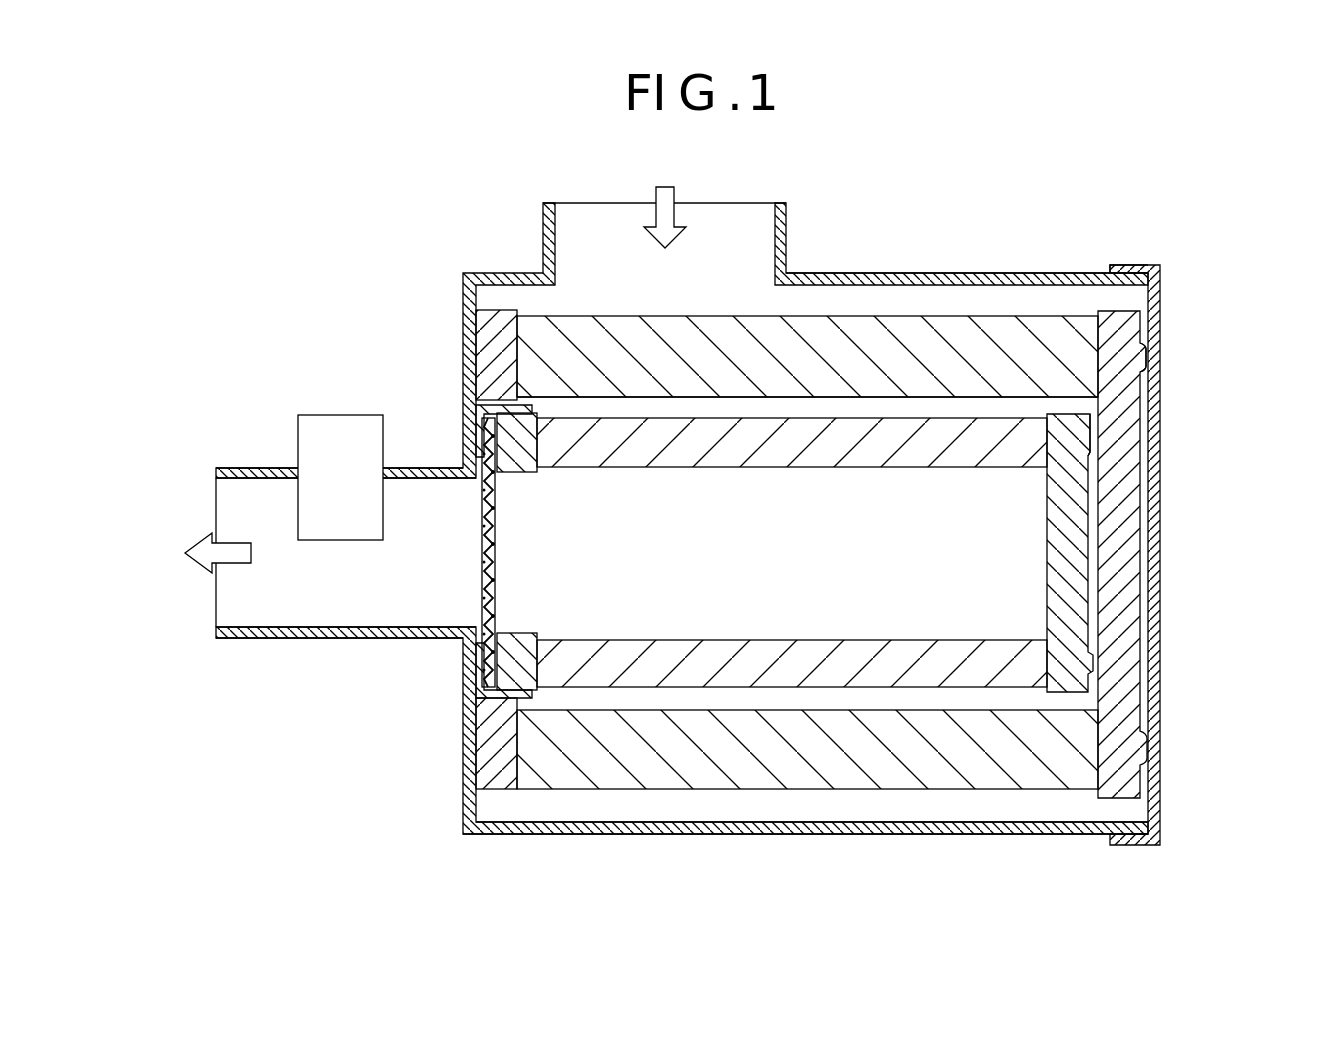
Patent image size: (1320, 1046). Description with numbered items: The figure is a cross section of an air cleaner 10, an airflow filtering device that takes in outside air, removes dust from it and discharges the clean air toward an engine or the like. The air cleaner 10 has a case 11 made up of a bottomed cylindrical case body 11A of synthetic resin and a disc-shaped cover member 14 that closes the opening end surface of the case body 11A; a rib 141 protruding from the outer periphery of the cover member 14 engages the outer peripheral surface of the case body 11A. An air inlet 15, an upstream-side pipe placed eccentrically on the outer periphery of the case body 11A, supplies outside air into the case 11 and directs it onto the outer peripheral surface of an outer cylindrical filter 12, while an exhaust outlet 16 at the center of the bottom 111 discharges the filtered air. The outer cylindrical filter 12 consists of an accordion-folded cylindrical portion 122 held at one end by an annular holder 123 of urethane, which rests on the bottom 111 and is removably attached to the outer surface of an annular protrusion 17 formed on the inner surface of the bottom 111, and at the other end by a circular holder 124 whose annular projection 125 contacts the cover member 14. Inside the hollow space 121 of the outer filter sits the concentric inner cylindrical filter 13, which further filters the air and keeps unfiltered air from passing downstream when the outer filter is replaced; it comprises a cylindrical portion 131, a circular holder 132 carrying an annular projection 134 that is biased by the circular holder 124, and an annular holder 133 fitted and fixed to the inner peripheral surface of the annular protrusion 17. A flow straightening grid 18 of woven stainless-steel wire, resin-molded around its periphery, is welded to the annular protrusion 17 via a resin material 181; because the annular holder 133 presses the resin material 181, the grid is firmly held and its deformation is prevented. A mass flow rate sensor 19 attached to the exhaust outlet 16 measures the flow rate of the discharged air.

The air cleaner 10 is at (880, 158).
The case 11 is at (893, 273).
The case body 11A is at (1013, 273).
The bottom 111 is at (490, 820).
The outer cylindrical filter 12 is at (715, 316).
The hollow space 121 is at (993, 398).
The cylindrical portion 122 is at (625, 335).
The annular holder 123 is at (483, 343).
The circular holder 124 is at (1125, 605).
The annular projection 125 is at (1145, 357).
The inner cylindrical filter 13 is at (860, 470).
The cylindrical portion 131 is at (767, 455).
The circular holder 132 is at (1052, 552).
The annular holder 133 is at (535, 472).
The annular projection 134 is at (1090, 442).
The cover member 14 is at (1160, 313).
The rib 141 is at (1130, 265).
The air inlet 15 is at (767, 205).
The exhaust outlet 16 is at (216, 617).
The annular protrusion 17 is at (500, 410).
The flow straightening grid 18 is at (495, 572).
The resin material 181 is at (478, 663).
The mass flow rate sensor 19 is at (343, 415).